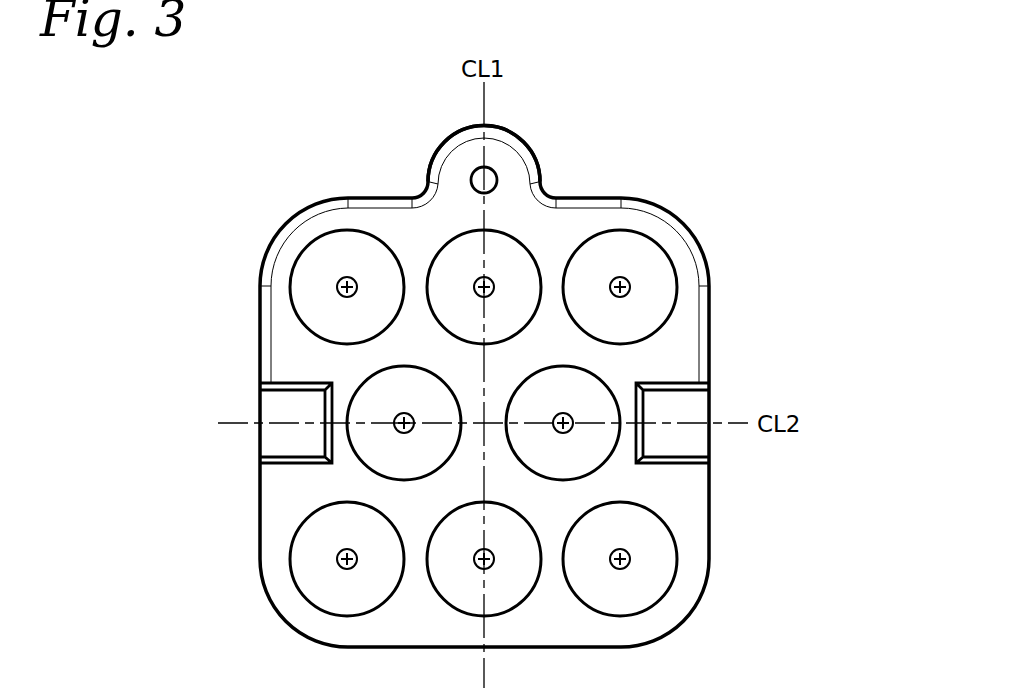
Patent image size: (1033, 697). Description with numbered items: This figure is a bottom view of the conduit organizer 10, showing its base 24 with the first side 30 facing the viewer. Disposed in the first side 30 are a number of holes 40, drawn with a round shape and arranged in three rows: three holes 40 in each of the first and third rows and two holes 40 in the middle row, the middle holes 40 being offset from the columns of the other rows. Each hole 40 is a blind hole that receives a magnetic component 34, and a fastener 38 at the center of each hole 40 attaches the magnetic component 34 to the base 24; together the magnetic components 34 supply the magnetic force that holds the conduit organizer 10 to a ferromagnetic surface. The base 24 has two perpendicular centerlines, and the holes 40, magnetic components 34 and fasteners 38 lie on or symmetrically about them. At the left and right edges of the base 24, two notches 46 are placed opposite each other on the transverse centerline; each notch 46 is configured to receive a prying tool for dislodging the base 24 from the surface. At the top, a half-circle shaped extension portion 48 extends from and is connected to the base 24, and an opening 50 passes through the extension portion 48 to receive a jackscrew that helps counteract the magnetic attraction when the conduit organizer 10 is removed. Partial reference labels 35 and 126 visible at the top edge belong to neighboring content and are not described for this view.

The conduit organizer 10 is at (770, 112).
The base 24 is at (328, 222).
The first side 30 is at (398, 228).
The magnetic component 34 is at (302, 262).
The fastener 38 is at (622, 278).
The hole 40 is at (681, 313).
The notch 46 is at (277, 413).
The extension portion 48 is at (450, 135).
The opening 50 is at (496, 170).
The element 35 is at (402, 0).
The element 126 is at (541, 0).